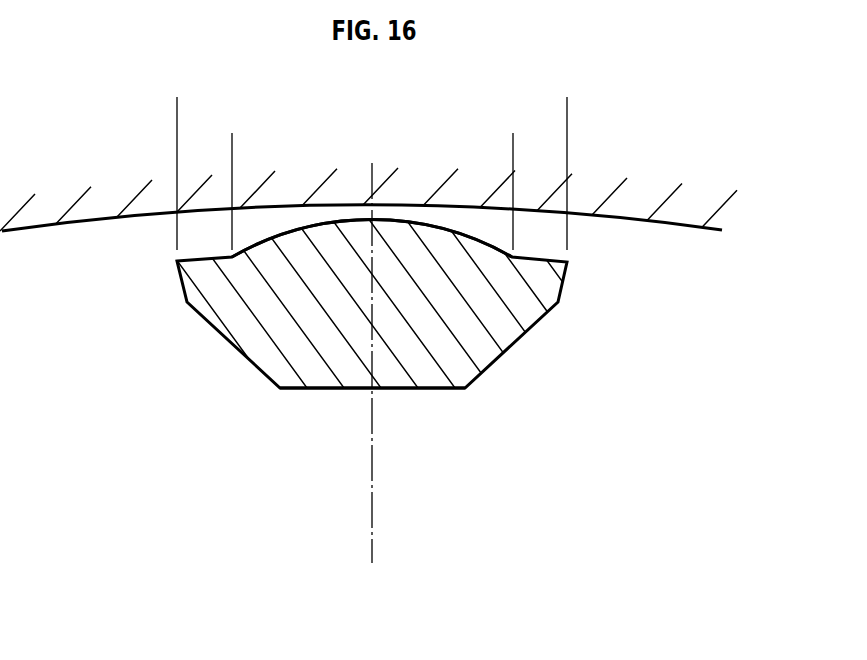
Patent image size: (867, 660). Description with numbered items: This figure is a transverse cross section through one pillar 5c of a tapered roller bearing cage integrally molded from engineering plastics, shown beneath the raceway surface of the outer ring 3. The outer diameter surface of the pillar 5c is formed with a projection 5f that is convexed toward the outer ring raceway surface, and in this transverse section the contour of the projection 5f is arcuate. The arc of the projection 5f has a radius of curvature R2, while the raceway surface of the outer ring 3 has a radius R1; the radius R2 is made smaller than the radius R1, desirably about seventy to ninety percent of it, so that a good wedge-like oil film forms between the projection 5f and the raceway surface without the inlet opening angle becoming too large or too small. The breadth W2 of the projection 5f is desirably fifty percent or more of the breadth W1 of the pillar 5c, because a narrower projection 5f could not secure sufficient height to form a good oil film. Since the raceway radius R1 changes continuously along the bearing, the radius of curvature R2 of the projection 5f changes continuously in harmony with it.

The outer ring 3 is at (683, 213).
The projection 5f is at (305, 260).
The pillar 5c is at (327, 389).
The breadth of the pillar W1 is at (567, 103).
The breadth of the projection W2 is at (513, 140).
The outer ring raceway surface radius R1 is at (620, 217).
The radius of curvature of the projection R2 is at (475, 240).